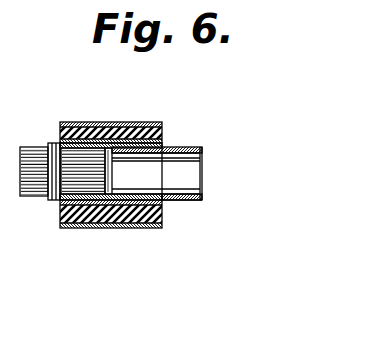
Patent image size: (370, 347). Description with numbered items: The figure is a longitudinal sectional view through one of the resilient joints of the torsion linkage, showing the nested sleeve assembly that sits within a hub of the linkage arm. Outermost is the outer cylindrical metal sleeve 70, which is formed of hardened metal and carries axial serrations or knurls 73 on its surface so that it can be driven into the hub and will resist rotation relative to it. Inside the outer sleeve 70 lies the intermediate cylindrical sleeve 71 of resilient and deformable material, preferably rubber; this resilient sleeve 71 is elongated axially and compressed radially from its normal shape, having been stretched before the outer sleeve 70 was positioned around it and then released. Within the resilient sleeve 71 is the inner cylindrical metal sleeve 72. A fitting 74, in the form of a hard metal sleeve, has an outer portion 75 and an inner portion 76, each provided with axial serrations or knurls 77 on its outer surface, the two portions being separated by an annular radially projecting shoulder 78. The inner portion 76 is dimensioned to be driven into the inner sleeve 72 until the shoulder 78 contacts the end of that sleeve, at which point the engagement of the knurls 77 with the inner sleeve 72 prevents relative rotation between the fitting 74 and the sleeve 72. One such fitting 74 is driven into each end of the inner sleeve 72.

The outer cylindrical metal sleeve 70 is at (67, 121).
The intermediate cylindrical sleeve 71 is at (143, 121).
The inner cylindrical metal sleeve 72 is at (163, 146).
The axial serrations or knurls 73 is at (85, 121).
The fitting 74 is at (194, 143).
The outer portion 75 is at (199, 200).
The inner portion 76 is at (127, 228).
The axial serrations or knurls 77 is at (33, 196).
The annular radially projecting shoulder 78 is at (165, 201).